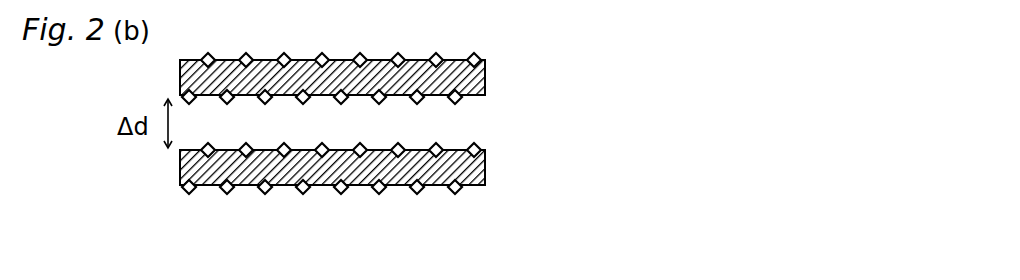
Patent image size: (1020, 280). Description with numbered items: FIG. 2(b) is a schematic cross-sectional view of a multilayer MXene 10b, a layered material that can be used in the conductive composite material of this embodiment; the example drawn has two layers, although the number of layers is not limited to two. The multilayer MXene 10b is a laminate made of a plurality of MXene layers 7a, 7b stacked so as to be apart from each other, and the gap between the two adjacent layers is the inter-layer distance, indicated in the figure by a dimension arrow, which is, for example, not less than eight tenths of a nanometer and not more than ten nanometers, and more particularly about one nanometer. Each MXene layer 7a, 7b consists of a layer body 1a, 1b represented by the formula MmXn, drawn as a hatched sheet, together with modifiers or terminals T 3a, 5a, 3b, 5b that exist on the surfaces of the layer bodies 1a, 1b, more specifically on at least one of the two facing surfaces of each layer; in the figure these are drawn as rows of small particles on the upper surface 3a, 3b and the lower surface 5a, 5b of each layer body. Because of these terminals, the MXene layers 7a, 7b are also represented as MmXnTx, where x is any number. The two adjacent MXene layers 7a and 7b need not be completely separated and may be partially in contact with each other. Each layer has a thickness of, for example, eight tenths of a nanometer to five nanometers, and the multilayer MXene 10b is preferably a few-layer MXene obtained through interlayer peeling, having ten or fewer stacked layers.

The layer body 1a is at (486, 73).
The modifier or terminal T 3a is at (480, 57).
The modifier or terminal T 5a is at (460, 97).
The MXene layer 7a is at (415, 78).
The layer body 1b is at (486, 163).
The modifier or terminal T 3b is at (480, 147).
The modifier or terminal T 5b is at (460, 187).
The MXene layer 7b is at (415, 168).
The multilayer MXene 10b is at (449, 144).